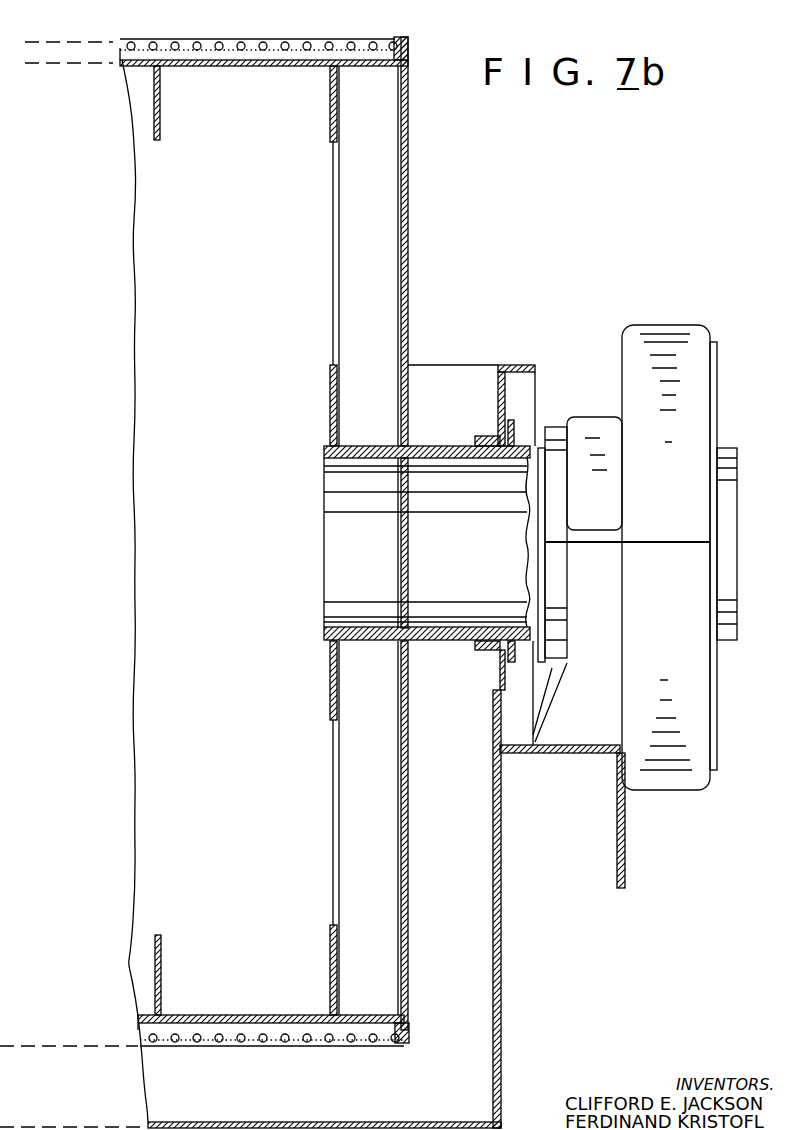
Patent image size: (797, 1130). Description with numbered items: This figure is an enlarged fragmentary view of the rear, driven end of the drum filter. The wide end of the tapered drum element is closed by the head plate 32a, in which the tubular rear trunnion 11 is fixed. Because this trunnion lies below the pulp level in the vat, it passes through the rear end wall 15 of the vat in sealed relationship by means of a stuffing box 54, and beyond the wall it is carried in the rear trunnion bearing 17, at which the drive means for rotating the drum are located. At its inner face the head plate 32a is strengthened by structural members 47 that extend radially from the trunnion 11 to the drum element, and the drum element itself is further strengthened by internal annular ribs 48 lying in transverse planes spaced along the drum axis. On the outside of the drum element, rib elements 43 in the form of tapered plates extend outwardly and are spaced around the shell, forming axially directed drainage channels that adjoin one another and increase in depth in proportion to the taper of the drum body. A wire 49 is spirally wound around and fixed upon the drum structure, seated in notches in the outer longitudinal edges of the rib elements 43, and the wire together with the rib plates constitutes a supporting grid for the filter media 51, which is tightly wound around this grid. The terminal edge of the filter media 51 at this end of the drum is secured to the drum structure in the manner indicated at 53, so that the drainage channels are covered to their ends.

The end trunnion 11 is at (336, 632).
The rear end wall 15 is at (503, 1018).
The trunnion bearing 17 is at (717, 398).
The head plate 32a is at (409, 246).
The rib element 43 is at (150, 56).
The structural member 47 is at (358, 210).
The internal annular rib 48 is at (160, 122).
The wire 49 is at (247, 52).
The filter media 51 is at (152, 40).
The filter media securing means 53 is at (404, 1046).
The stuffing box 54 is at (487, 436).